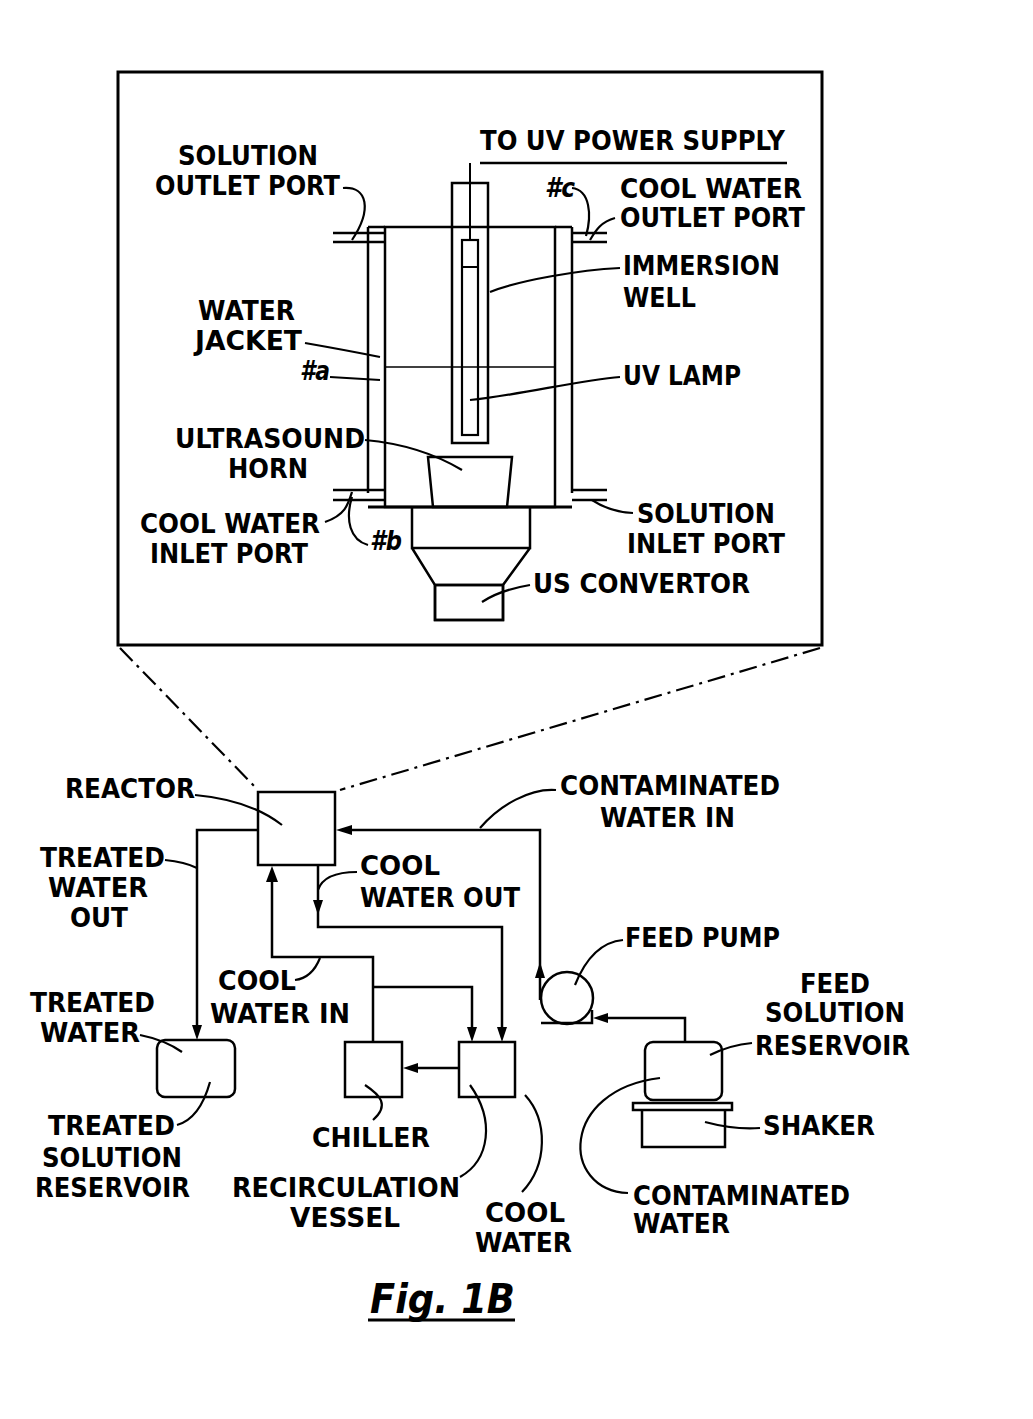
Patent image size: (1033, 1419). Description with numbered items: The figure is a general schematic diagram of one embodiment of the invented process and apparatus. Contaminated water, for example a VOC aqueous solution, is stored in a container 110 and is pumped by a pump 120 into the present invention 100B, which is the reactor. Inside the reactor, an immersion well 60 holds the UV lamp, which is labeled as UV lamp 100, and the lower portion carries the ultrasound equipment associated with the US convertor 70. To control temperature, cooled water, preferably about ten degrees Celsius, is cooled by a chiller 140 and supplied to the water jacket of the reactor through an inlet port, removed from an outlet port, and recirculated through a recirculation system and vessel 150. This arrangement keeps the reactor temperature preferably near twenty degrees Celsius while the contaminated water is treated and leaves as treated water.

The present invention 100B is at (290, 54).
The immersion well 60 is at (490, 342).
The UV lamp 100 is at (468, 413).
The ultrasound converter 70 is at (452, 598).
The pump 120 is at (576, 1000).
The chiller 140 is at (365, 1078).
The recirculation vessel 150 is at (498, 1083).
The container 110 is at (700, 1068).